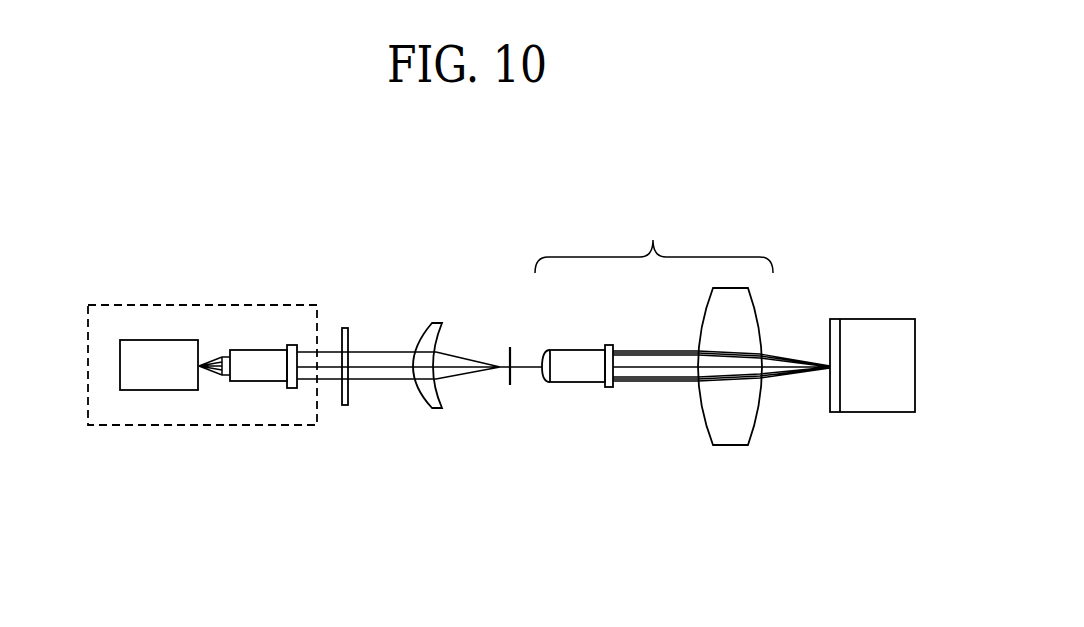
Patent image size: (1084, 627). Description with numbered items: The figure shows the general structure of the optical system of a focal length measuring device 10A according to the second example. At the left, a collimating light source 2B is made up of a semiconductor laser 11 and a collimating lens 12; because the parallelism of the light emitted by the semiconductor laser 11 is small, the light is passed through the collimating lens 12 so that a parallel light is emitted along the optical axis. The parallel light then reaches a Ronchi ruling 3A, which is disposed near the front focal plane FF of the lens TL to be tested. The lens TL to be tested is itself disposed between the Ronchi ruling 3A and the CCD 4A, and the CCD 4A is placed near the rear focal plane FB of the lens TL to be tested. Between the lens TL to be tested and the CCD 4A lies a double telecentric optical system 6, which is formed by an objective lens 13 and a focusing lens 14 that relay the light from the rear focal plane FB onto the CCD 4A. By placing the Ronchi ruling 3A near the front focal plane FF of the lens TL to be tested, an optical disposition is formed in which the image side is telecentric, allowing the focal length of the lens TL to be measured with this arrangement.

The focal length measuring device 10A is at (435, 234).
The collimating light source 2B is at (175, 303).
The semiconductor laser 11 is at (160, 392).
The collimating lens 12 is at (262, 384).
The Ronchi ruling 3A is at (349, 327).
The front focal plane FF is at (343, 433).
The lens to be tested TL is at (432, 345).
The rear focal plane FB is at (507, 389).
The double telecentric optical system 6 is at (682, 365).
The objective lens 13 is at (580, 384).
The focusing lens 14 is at (712, 446).
The CCD 4A is at (885, 318).